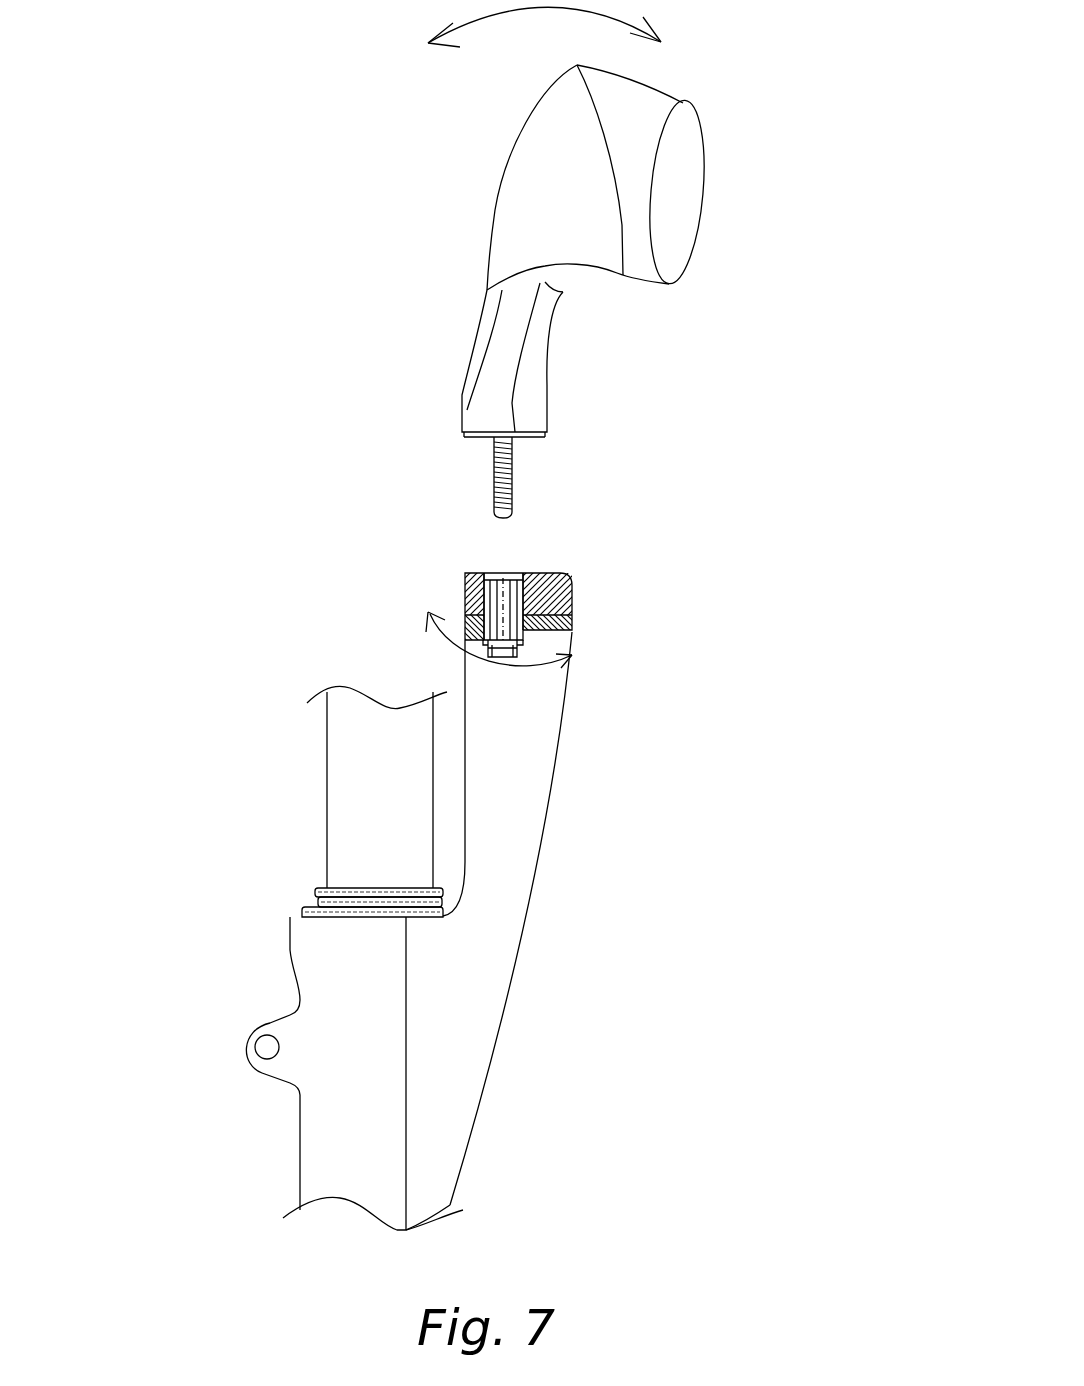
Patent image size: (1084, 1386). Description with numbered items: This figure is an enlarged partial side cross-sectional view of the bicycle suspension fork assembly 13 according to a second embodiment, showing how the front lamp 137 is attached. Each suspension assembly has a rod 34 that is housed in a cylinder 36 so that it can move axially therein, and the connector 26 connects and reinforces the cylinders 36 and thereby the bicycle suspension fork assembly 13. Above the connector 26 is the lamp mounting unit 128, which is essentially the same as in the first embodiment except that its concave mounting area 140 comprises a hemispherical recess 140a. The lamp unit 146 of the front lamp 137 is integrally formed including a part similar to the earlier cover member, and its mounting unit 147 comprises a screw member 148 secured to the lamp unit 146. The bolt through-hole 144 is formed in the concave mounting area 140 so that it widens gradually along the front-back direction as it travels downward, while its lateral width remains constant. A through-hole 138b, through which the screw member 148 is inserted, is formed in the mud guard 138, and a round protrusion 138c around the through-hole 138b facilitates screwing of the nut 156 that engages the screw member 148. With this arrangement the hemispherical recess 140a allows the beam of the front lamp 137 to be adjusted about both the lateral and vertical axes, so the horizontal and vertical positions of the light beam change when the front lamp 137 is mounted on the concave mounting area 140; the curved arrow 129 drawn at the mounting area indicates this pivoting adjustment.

The front lamp 137 is at (683, 152).
The lamp unit 146 is at (643, 267).
The mounting unit 147 is at (527, 480).
The screw member 148 is at (512, 460).
The concave mounting area 140 is at (480, 566).
The hemispherical recess 140a is at (473, 573).
The lamp mounting unit 128 is at (540, 559).
The bolt through-hole 144 is at (515, 605).
The mud guard 138 is at (574, 618).
The through-hole 138b is at (507, 665).
The round protrusion 138c is at (523, 655).
The nut 156 is at (483, 665).
The pivot direction arrow 129 is at (575, 640).
The bicycle suspension fork assembly 13 is at (553, 932).
The connector 26 is at (483, 1037).
The rod 34 is at (343, 833).
The cylinder 36 is at (320, 1147).